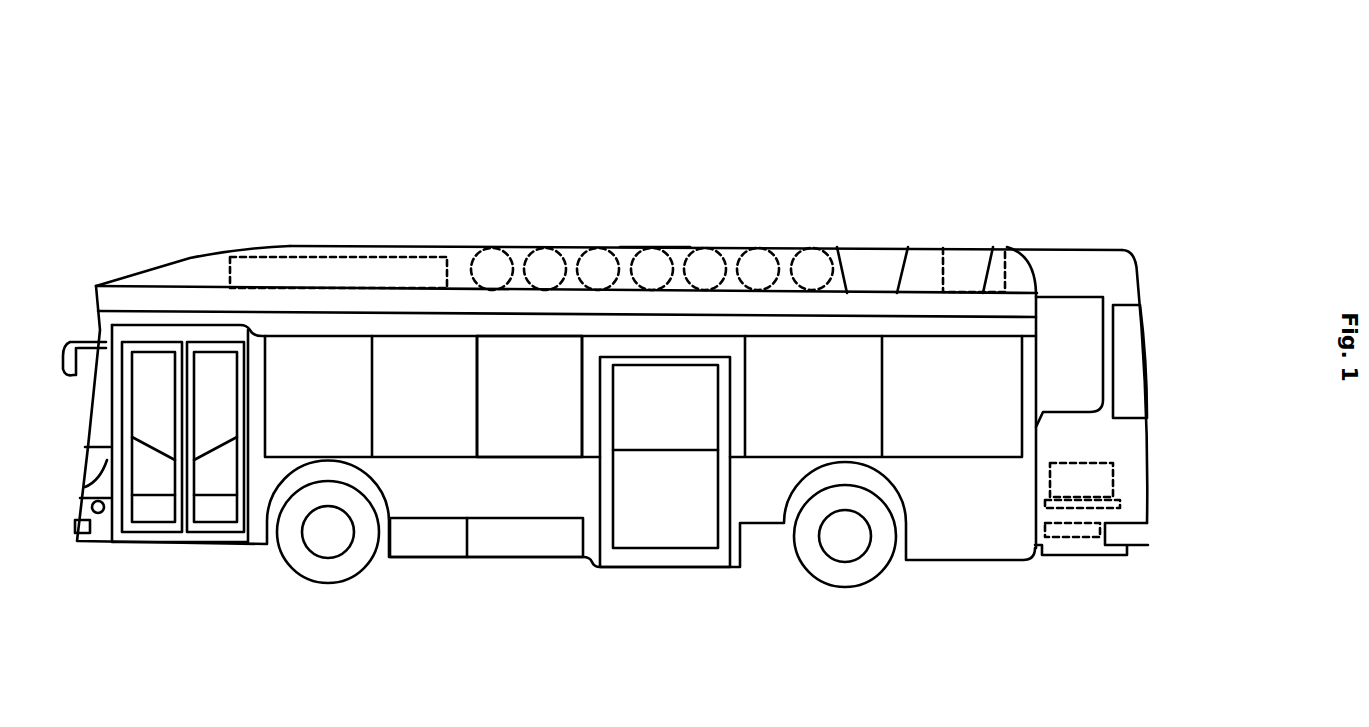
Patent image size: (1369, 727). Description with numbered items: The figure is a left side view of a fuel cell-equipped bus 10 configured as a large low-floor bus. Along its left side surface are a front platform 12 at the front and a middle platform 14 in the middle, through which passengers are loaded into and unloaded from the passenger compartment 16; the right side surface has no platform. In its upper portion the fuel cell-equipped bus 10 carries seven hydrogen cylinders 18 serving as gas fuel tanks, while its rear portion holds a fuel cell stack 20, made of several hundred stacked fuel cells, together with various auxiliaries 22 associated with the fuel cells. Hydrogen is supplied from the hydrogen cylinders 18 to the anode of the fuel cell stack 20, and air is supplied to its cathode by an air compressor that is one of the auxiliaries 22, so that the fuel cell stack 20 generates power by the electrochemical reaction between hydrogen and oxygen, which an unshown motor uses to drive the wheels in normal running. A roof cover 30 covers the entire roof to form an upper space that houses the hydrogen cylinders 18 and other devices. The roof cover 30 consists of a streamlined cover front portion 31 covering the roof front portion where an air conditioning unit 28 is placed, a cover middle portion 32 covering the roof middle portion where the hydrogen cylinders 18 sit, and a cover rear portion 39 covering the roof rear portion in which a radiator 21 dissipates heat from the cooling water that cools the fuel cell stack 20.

The fuel cell-equipped bus 10 is at (787, 146).
The front platform 12 is at (150, 483).
The middle platform 14 is at (653, 523).
The passenger compartment 16 is at (517, 418).
The hydrogen cylinders 18 is at (490, 247).
The fuel cell stack 20 is at (1107, 480).
The radiator 21 is at (987, 250).
The auxiliaries 22 is at (1080, 523).
The air conditioning unit 28 is at (372, 257).
The roof cover 30 is at (437, 245).
The cover front portion 31 is at (188, 255).
The cover middle portion 32 is at (652, 247).
The cover rear portion 39 is at (933, 250).